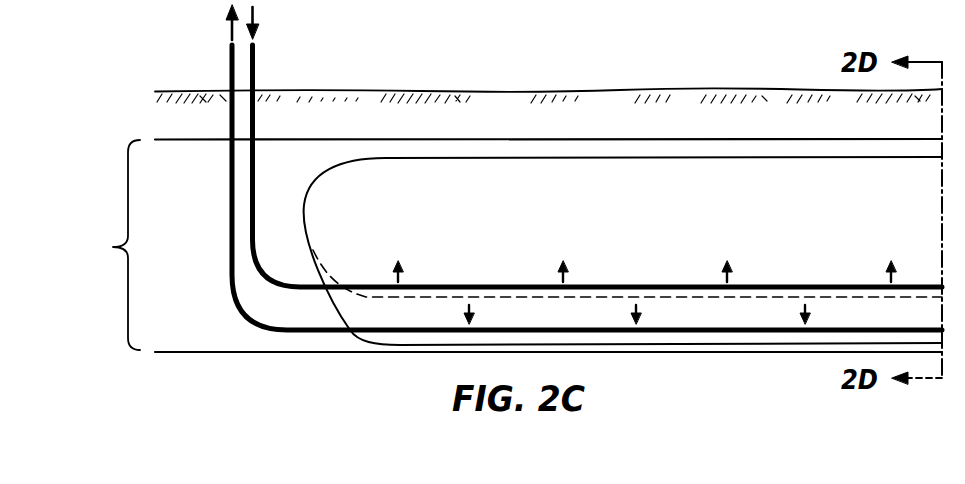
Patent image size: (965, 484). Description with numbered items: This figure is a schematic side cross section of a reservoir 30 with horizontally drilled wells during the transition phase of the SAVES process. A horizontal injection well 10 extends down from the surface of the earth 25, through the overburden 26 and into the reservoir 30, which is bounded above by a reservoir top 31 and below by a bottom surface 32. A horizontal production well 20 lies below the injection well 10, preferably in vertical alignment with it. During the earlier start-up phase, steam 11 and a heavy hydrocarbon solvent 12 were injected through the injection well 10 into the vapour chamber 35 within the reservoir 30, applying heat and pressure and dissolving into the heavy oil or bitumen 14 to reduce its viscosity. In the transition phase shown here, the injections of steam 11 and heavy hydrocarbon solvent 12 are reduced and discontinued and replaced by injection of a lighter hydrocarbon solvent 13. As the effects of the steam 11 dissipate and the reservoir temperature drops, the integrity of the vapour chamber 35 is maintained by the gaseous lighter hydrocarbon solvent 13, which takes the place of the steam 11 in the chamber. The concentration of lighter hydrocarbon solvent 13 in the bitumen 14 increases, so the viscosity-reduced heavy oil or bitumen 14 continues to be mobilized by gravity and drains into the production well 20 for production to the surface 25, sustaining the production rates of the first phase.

The horizontal injection well 10 is at (256, 66).
The horizontal production well 20 is at (229, 66).
The surface of the earth 25 is at (393, 99).
The overburden 26 is at (588, 116).
The reservoir 30 is at (111, 245).
The reservoir top 31 is at (271, 141).
The bottom surface 32 is at (297, 355).
The vapour chamber 35 is at (490, 172).
The steam 11 is at (600, 231).
The heavy hydrocarbon solvent 12 is at (636, 231).
The lighter hydrocarbon solvent 13 is at (672, 231).
The heavy oil or bitumen 14 is at (705, 231).